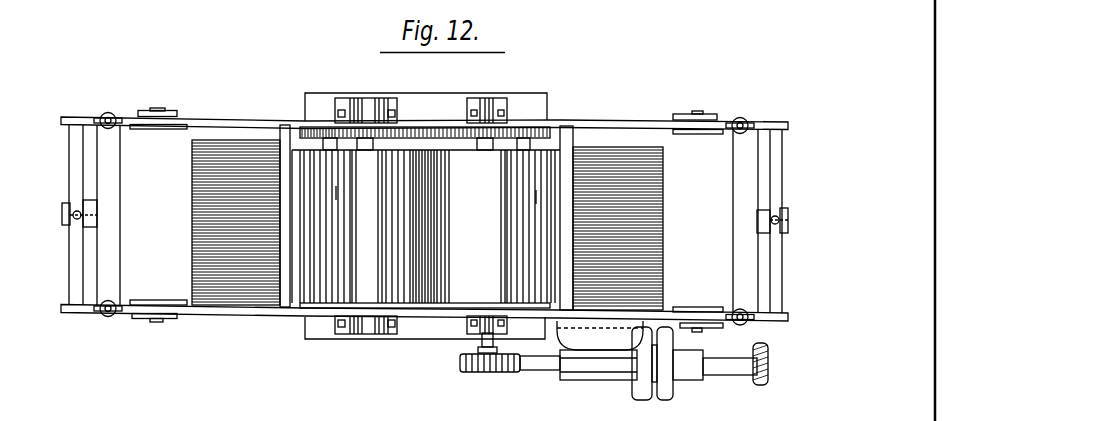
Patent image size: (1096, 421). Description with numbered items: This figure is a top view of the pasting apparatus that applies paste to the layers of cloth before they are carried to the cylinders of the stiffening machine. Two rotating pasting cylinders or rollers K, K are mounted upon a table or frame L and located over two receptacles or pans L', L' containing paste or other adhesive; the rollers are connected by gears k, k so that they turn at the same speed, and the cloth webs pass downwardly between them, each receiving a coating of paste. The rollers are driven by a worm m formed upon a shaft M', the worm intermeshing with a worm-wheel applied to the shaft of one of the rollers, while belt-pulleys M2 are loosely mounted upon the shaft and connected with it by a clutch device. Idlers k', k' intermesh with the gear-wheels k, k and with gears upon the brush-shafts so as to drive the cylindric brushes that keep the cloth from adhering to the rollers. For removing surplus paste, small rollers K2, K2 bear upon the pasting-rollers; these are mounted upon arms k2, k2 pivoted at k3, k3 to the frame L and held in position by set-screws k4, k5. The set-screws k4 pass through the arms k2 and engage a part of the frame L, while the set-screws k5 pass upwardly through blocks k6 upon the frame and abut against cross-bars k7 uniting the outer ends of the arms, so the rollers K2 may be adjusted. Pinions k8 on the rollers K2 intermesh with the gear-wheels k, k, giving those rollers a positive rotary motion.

The gears k is at (425, 121).
The idlers k' is at (425, 204).
The arms k2 is at (252, 122).
The pivots k3 is at (166, 108).
The set-screws k4 is at (118, 108).
The set-screws k5 is at (75, 219).
The blocks k6 is at (62, 213).
The cross-bars k7 is at (73, 162).
The pinions k8 is at (323, 130).
The pasting cylinders or rollers K is at (426, 226).
The small rollers K2 is at (336, 186).
The table or frame L is at (409, 217).
The receptacles or pans L' is at (427, 225).
The worm m is at (495, 372).
The shaft M' is at (537, 368).
The belt-pulleys M2 is at (548, 372).